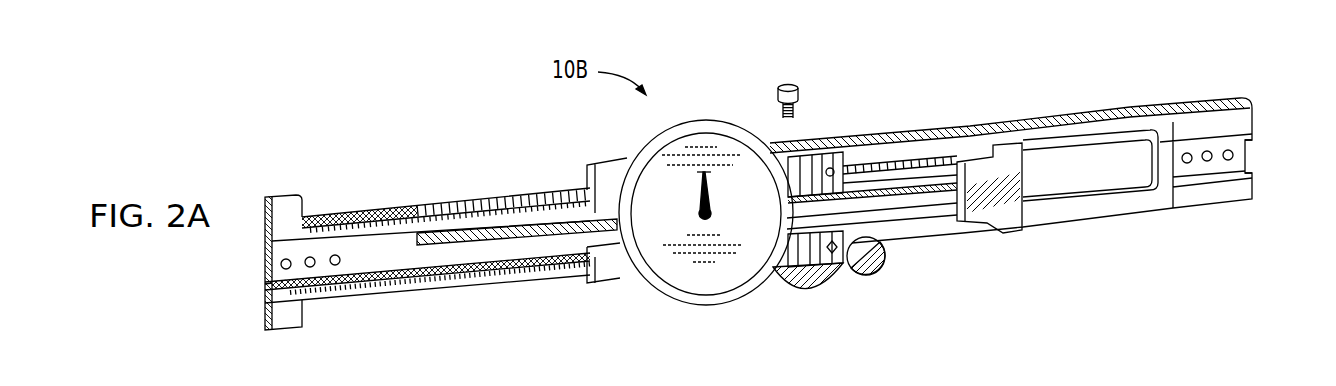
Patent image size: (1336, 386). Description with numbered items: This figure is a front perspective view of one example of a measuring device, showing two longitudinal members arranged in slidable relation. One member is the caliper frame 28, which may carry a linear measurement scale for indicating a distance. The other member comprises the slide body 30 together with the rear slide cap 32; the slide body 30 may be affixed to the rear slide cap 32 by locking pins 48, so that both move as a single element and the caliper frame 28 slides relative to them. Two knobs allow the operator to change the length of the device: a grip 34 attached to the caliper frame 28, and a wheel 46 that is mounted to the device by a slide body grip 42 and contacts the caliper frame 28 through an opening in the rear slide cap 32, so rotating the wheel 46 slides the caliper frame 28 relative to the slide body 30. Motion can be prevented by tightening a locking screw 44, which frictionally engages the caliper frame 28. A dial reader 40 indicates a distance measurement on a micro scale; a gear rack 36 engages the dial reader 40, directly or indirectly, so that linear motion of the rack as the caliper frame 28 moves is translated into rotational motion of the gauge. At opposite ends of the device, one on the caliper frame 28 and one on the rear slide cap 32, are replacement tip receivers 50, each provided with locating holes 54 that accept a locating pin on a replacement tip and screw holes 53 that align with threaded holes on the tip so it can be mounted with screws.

The caliper frame 28 is at (390, 289).
The slide body 30 is at (613, 284).
The rear slide cap 32 is at (1100, 218).
The grip 34 is at (984, 206).
The gear rack 36 is at (466, 212).
The dial reader 40 is at (705, 306).
The slide body grip 42 is at (812, 291).
The locking screw 44 is at (785, 81).
The wheel 46 is at (867, 277).
The locking pin 48 is at (831, 167).
The replacement tip receiver 50 is at (266, 283).
The screw hole 53 is at (286, 269).
The locating hole 54 is at (310, 256).